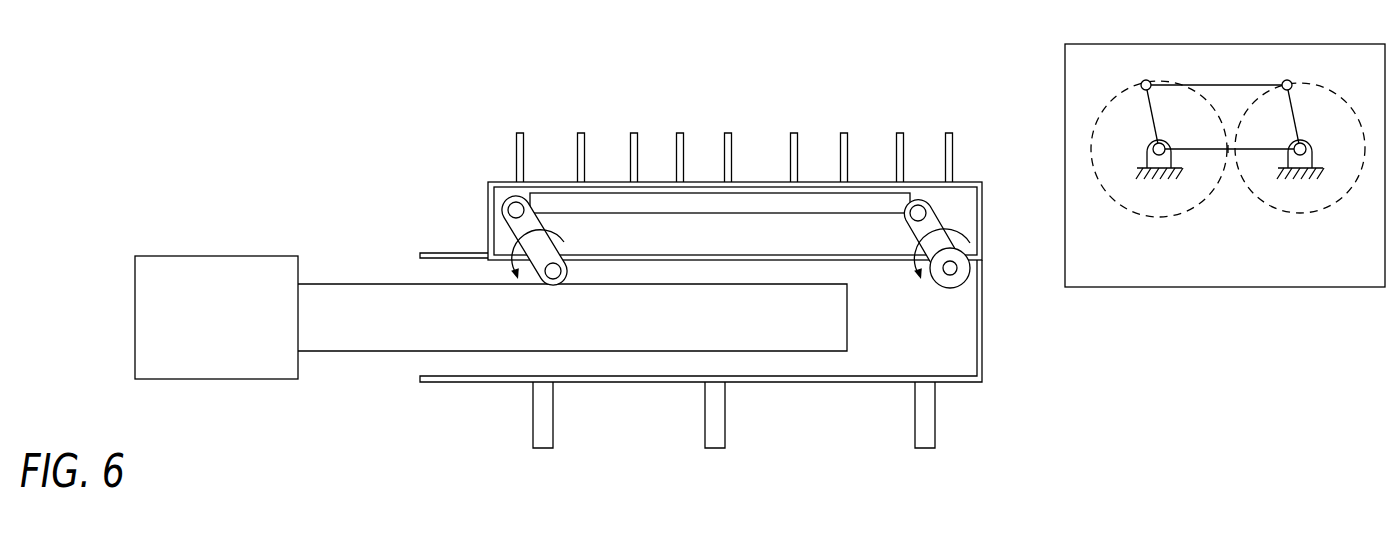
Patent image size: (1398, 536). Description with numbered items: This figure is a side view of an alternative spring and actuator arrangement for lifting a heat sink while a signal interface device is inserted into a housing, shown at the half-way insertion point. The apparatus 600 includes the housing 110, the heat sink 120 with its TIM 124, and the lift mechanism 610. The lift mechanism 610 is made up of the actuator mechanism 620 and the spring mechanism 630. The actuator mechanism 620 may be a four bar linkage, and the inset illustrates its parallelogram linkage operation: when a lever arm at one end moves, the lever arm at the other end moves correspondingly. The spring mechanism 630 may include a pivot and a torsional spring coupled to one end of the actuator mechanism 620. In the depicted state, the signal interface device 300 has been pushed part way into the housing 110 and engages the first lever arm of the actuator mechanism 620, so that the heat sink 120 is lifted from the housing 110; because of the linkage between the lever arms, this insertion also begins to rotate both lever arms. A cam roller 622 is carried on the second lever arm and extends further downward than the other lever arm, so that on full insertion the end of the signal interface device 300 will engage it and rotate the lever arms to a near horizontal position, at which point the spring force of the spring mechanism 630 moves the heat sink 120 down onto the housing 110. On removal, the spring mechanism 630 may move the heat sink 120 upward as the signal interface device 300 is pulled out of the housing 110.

The housing 110 is at (987, 323).
The heat sink 120 is at (953, 146).
The TIM 124 is at (743, 200).
The signal interface device 300 is at (205, 268).
The apparatus 600 is at (887, 187).
The lift mechanism 610 is at (464, 194).
The actuator mechanism 620 is at (943, 187).
The cam roller 622 is at (930, 285).
The spring mechanism 630 is at (957, 263).